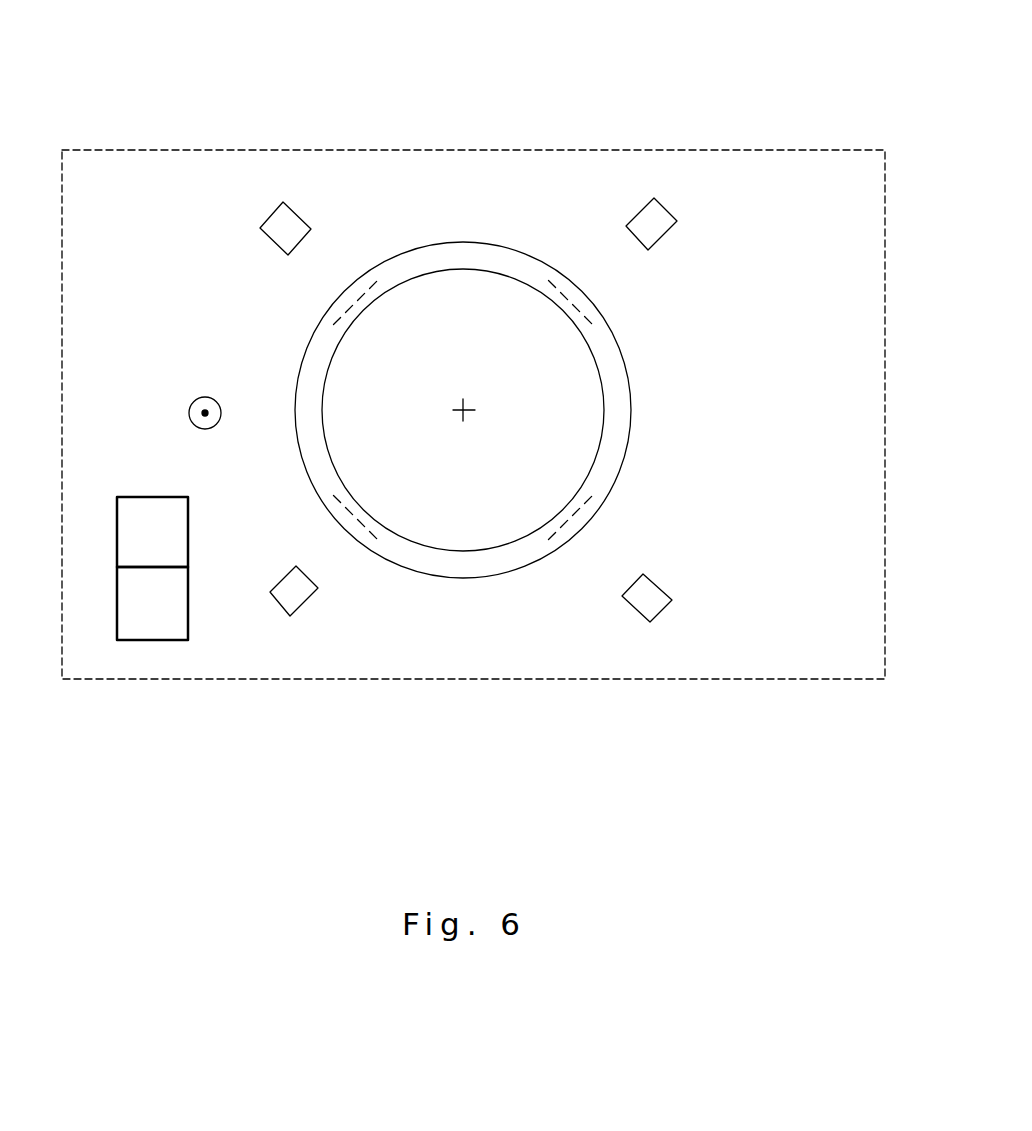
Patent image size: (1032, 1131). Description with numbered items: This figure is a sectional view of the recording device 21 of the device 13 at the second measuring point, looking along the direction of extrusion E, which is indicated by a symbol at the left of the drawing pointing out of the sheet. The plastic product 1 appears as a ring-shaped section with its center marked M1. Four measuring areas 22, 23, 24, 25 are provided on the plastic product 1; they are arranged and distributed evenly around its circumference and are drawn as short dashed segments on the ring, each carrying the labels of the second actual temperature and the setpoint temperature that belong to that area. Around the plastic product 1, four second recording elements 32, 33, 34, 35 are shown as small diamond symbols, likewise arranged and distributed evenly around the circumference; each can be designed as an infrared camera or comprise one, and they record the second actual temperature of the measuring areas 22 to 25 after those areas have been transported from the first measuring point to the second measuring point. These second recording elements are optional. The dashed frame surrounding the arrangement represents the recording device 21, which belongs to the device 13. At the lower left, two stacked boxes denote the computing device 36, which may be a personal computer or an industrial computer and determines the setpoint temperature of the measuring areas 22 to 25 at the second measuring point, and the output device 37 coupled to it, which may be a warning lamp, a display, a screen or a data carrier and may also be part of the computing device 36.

The device 13 is at (471, 113).
The recording device 21 is at (812, 150).
The plastic product 1 is at (477, 241).
The center point of workpiece M1 is at (472, 412).
The measuring area 22 is at (358, 299).
The measuring area 23 is at (377, 537).
The measuring area 24 is at (587, 498).
The measuring area 25 is at (567, 293).
The second recording element 32 is at (262, 219).
The second recording element 33 is at (273, 597).
The second recording element 34 is at (657, 582).
The second recording element 35 is at (660, 202).
The computing device 36 is at (170, 620).
The output device 37 is at (170, 550).
The direction of extrusion E is at (190, 413).